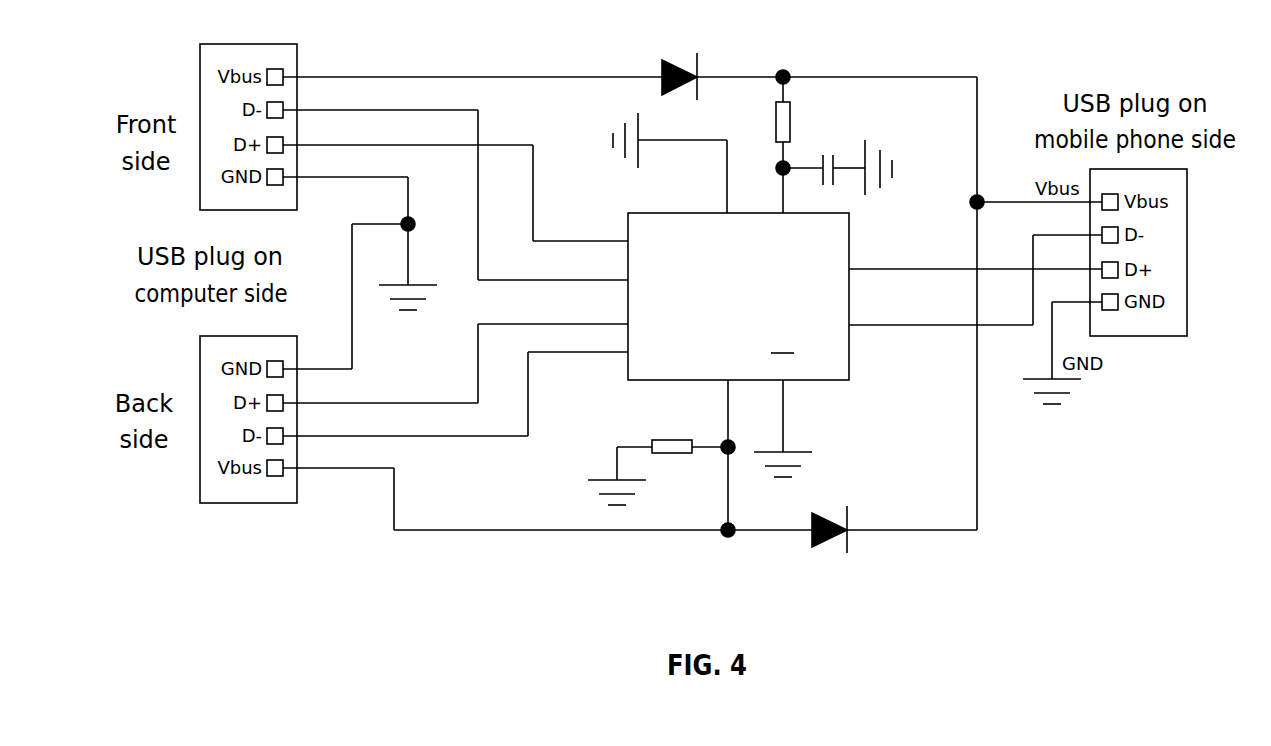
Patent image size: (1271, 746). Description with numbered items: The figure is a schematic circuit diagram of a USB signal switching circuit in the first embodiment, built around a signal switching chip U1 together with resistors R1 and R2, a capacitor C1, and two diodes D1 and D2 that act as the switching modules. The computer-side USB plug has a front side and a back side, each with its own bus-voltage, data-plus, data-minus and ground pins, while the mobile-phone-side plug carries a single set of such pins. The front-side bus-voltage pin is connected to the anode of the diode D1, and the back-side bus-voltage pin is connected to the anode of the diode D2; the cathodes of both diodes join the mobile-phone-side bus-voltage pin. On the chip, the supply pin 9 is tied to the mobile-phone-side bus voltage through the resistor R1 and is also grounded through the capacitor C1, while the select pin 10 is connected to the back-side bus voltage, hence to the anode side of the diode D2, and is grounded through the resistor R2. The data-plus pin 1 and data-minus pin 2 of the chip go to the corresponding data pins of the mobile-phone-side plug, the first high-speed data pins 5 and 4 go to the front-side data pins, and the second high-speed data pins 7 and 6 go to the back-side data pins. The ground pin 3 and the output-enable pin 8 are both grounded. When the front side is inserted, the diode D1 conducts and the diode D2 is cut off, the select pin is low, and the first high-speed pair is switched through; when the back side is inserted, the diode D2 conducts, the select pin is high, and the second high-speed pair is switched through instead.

The diode D1 is at (679, 63).
The diode D2 is at (829, 546).
The resistor R1 is at (769, 122).
The resistor R2 is at (658, 460).
The capacitor C1 is at (837, 160).
The signal switching chip U1 is at (746, 313).
The U1 pin 1 D+ 1 is at (975, 256).
The U1 pin 2 D- 2 is at (975, 280).
The U1 pin 3 GND 3 is at (670, 163).
The U1 pin 4 HSD1- 4 is at (455, 195).
The U1 pin 5 HSD1+ 5 is at (455, 193).
The U1 pin 6 HSD2- 6 is at (455, 385).
The U1 pin 7 HSD2+ 7 is at (455, 351).
The U1 pin 8 OE 8 is at (783, 428).
The U1 pin 9 VCC 9 is at (769, 190).
The U1 pin 10 S 10 is at (711, 455).